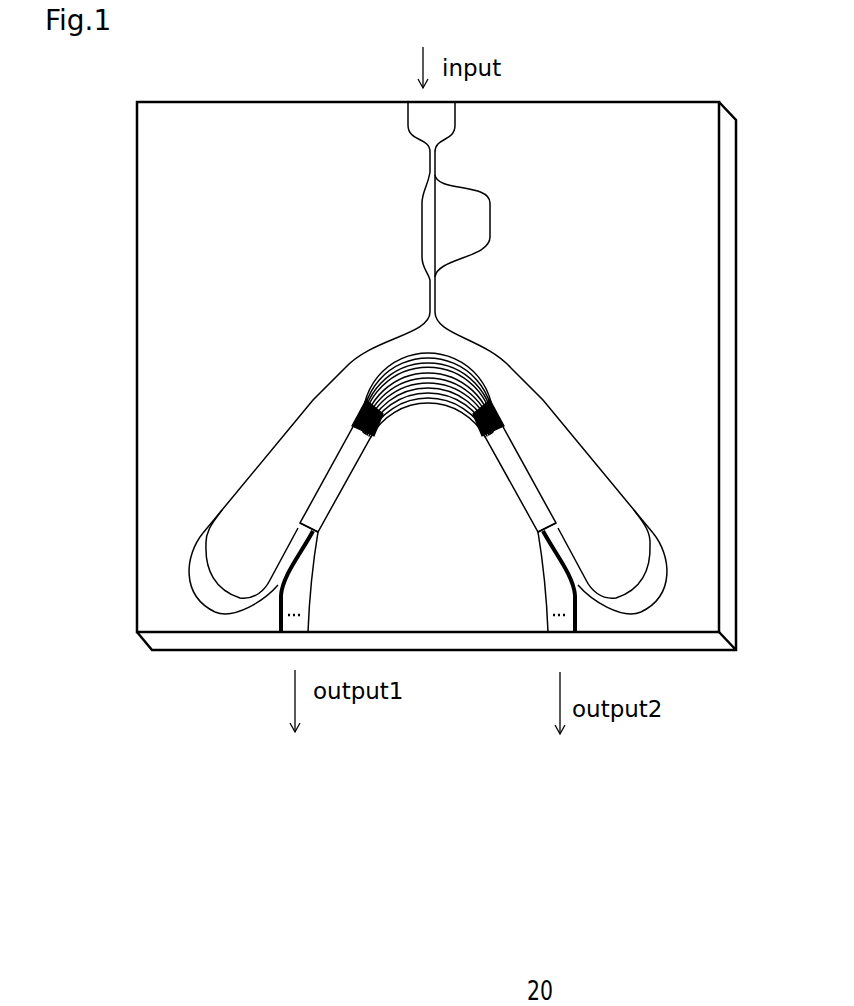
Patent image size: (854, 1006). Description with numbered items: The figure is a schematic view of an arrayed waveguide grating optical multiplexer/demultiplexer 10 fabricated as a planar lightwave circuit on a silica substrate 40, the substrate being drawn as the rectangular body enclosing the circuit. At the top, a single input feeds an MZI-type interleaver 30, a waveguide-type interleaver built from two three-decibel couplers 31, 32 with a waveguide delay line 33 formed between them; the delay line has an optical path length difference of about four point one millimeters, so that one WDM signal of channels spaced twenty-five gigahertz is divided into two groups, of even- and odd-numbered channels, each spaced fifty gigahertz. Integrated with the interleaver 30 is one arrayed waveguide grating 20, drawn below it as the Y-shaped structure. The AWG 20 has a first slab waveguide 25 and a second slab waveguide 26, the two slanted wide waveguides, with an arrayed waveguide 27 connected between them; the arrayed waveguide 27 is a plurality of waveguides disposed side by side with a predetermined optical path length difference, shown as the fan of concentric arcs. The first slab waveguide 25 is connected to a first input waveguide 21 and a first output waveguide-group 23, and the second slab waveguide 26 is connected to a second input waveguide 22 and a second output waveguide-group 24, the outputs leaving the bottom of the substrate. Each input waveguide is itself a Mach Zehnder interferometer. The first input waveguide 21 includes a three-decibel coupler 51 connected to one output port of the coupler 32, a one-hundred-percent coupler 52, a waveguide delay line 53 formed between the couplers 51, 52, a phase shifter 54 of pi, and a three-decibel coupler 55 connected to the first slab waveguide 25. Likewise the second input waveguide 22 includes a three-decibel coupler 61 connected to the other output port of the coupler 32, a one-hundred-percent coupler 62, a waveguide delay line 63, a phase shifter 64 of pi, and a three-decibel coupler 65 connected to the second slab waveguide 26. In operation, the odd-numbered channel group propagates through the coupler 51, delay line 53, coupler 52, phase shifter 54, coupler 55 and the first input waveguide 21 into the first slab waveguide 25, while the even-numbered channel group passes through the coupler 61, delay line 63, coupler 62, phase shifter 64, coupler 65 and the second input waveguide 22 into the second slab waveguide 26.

The arrayed waveguide grating optical multiplexer/demultiplexer 10 is at (665, 64).
The silica substrate 40 is at (694, 117).
The MZI-type interleaver 30 is at (458, 207).
The 3 dB coupler 31 is at (430, 156).
The 3 dB coupler 32 is at (430, 287).
The waveguide delay line 33 is at (490, 224).
The arrayed waveguide grating 20 is at (444, 388).
The arrayed waveguide 27 is at (437, 406).
The first slab waveguide 25 is at (343, 488).
The second slab waveguide 26 is at (517, 488).
The first input waveguide 21 is at (272, 592).
The second input waveguide 22 is at (584, 592).
The first output waveguide-group 23 is at (313, 597).
The second output waveguide-group 24 is at (543, 597).
The 3 dB coupler 51 is at (222, 512).
The 100% coupler 52 is at (278, 566).
The waveguide delay line 53 is at (206, 605).
The phase shifter 54 is at (288, 548).
The 3 dB coupler 55 is at (298, 526).
The 3 dB coupler 61 is at (640, 520).
The 100% coupler 62 is at (577, 573).
The waveguide delay line 63 is at (650, 607).
The phase shifter 64 is at (567, 547).
The 3 dB coupler 65 is at (556, 529).